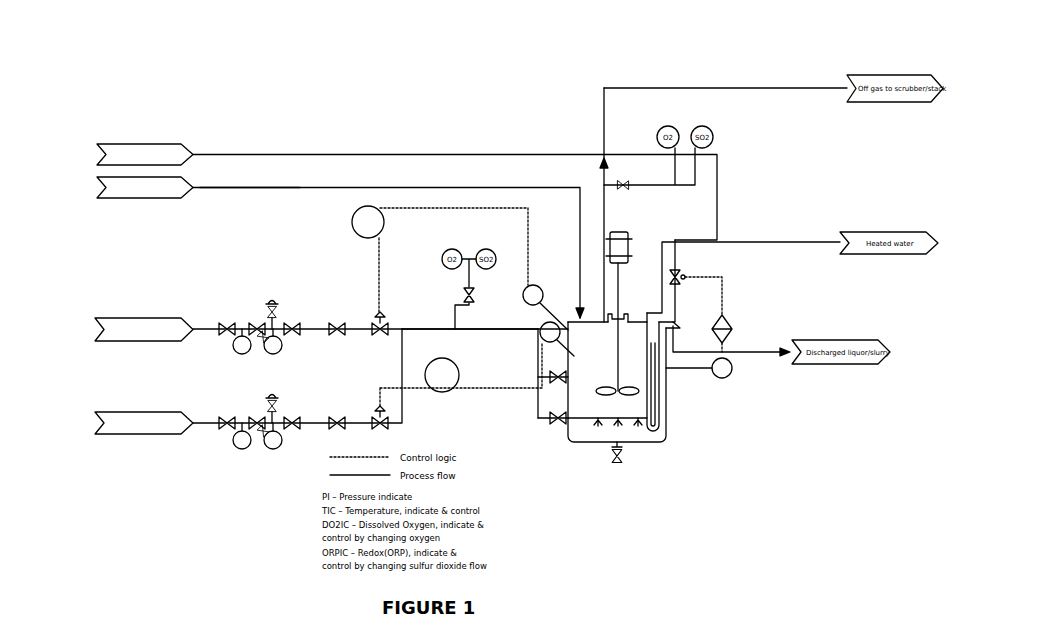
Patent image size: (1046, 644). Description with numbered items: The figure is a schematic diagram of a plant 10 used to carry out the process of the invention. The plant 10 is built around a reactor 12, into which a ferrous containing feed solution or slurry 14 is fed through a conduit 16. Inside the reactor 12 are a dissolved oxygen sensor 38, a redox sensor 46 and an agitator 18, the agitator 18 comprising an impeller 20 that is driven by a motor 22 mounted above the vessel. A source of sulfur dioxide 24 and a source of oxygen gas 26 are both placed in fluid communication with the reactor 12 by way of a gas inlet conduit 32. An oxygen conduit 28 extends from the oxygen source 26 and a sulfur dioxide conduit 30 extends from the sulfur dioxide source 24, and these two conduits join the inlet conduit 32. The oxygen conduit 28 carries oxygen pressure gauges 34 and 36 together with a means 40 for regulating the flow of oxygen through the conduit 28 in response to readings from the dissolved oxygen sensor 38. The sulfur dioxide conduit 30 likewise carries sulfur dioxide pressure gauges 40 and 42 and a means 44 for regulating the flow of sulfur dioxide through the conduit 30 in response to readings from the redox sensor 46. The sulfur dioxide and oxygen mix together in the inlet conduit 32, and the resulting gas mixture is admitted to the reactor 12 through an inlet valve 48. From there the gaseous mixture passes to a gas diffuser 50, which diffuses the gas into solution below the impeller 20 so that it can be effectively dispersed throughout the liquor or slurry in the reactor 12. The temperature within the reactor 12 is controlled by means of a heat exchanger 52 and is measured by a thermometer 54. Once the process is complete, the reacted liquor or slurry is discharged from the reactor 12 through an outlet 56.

The plant 10 is at (292, 91).
The reactor 12 is at (668, 441).
The feed solution or slurry 14 is at (100, 186).
The conduit 16 is at (240, 188).
The agitator 18 is at (600, 378).
The impeller 20 is at (600, 398).
The motor 22 is at (628, 238).
The source of sulfur dioxide 24 is at (104, 433).
The source of oxygen gas 26 is at (100, 337).
The oxygen conduit 28 is at (305, 327).
The sulfur dioxide conduit 30 is at (312, 432).
The gas inlet conduit 32 is at (418, 327).
The oxygen pressure gauge 34 is at (242, 355).
The oxygen pressure gauge 36 is at (278, 355).
The dissolved oxygen sensor 38 is at (538, 285).
The means for regulating the flow of oxygen 40 is at (240, 450).
The sulfur dioxide pressure gauge 42 is at (275, 450).
The means for regulating the flow of sulfur dioxide 44 is at (459, 370).
The redox sensor 46 is at (540, 343).
The inlet valve 48 is at (558, 428).
The gas diffuser 50 is at (632, 445).
The heat exchanger 52 is at (656, 388).
The thermometer 54 is at (734, 370).
The outlet 56 is at (733, 323).